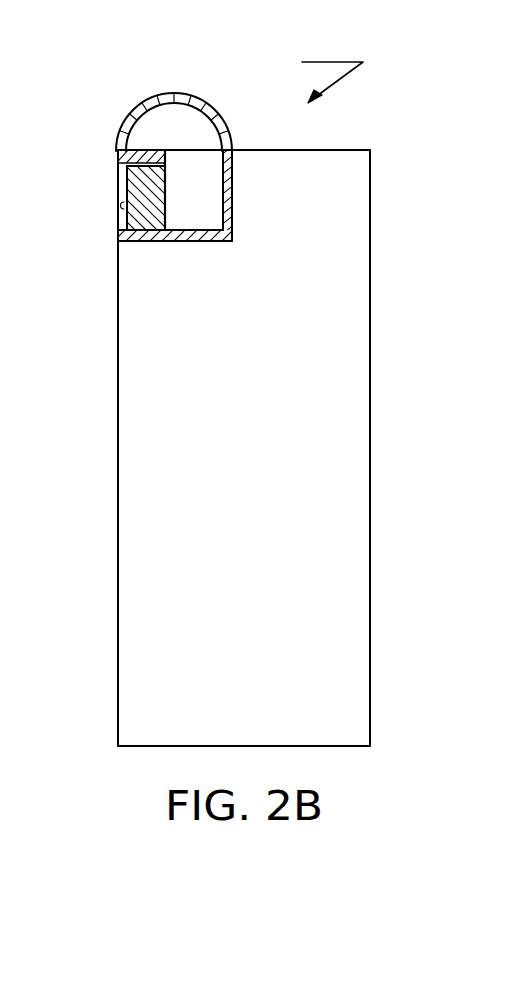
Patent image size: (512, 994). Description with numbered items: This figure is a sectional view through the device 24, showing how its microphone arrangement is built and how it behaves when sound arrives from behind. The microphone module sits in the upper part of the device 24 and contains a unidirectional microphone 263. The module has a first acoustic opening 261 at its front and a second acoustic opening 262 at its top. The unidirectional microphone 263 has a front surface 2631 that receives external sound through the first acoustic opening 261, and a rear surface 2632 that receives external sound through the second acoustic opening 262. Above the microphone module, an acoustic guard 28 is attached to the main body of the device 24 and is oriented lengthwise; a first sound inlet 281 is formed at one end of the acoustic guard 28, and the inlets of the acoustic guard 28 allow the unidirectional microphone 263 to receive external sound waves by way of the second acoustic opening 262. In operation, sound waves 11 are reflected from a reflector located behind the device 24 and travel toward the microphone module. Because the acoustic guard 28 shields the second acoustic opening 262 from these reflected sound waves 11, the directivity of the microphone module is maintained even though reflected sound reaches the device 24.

The sound waves 11 is at (338, 82).
The device 24 is at (350, 335).
The acoustic guard 28 is at (167, 102).
The first sound inlet 281 is at (155, 122).
The first acoustic opening 261 is at (117, 192).
The second acoustic opening 262 is at (197, 152).
The unidirectional microphone 263 is at (120, 220).
The front surface 2631 is at (168, 212).
The rear surface 2632 is at (168, 188).